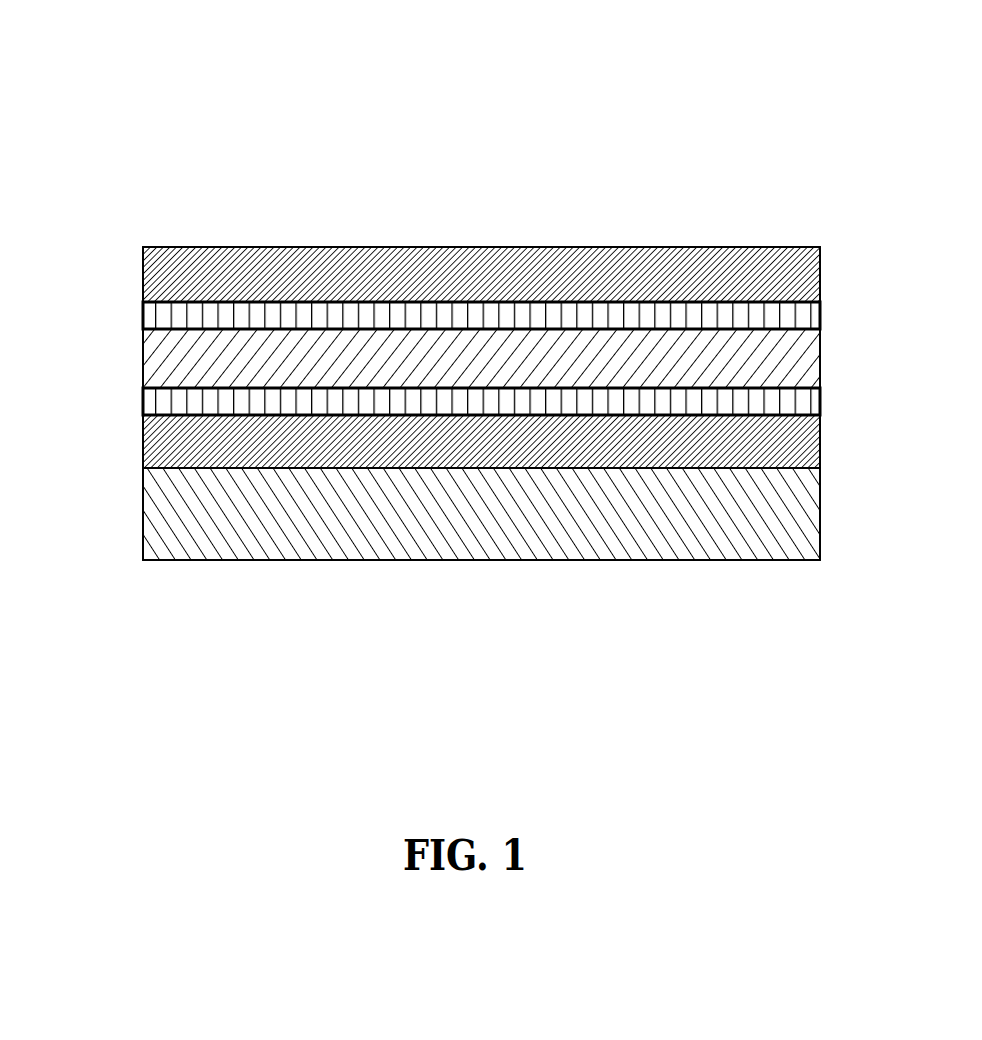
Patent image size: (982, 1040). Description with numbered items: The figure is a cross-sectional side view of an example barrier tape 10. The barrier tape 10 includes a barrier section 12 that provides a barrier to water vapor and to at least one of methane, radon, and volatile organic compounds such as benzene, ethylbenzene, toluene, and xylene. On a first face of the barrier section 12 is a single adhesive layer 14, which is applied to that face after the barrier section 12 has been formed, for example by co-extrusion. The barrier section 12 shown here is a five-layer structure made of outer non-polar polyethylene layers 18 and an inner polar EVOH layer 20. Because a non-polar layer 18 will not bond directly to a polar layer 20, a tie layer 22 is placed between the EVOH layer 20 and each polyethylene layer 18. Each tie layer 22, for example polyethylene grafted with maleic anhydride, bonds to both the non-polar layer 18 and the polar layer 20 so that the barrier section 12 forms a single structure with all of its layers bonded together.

The barrier tape 10 is at (738, 124).
The barrier section 12 is at (825, 247).
The adhesive layer 14 is at (345, 538).
The non-polar layer 18 is at (160, 283).
The polar layer 20 is at (158, 353).
The tie layer 22 is at (158, 318).